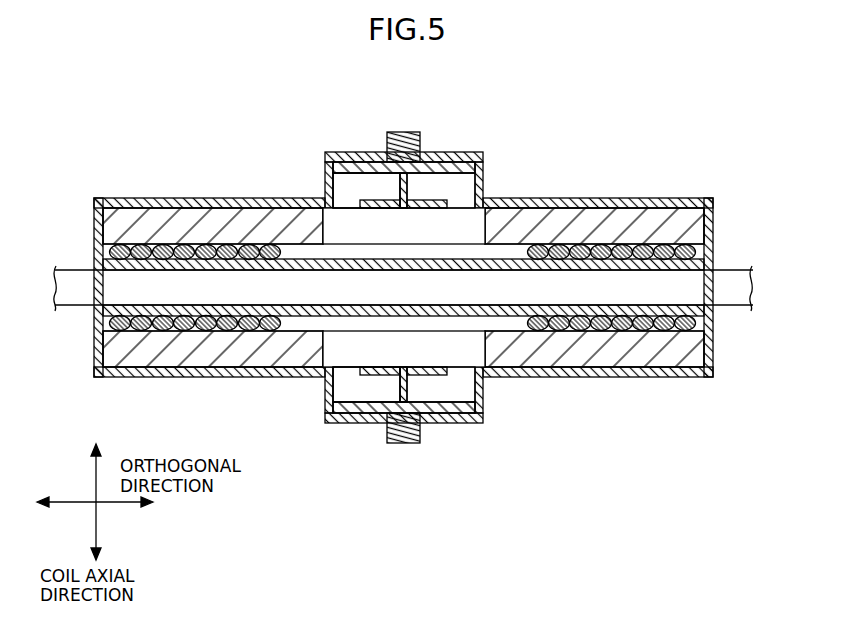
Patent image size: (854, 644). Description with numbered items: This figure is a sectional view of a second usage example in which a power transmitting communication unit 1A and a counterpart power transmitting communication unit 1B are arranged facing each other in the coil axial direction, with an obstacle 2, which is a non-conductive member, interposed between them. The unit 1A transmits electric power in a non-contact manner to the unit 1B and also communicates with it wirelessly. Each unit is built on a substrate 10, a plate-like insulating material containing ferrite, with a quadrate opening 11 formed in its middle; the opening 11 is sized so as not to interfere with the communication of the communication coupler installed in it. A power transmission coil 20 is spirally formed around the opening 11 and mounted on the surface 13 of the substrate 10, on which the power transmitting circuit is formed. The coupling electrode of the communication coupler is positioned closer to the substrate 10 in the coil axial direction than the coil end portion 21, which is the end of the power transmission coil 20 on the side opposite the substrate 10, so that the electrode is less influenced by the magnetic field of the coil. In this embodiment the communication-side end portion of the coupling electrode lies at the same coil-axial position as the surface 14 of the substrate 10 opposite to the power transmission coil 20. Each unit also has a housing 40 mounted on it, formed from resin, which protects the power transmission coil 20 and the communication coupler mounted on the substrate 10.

The power transmitting communication unit 1A is at (573, 105).
The power transmitting communication unit 1B is at (573, 476).
The obstacle 2 is at (754, 273).
The substrate 10 is at (98, 215).
The opening 11 is at (328, 226).
The surface 13 is at (98, 256).
The surface 14 is at (148, 208).
The power transmission coil 20 is at (98, 252).
The coil end portion 21 is at (577, 332).
The housing 40 is at (173, 199).